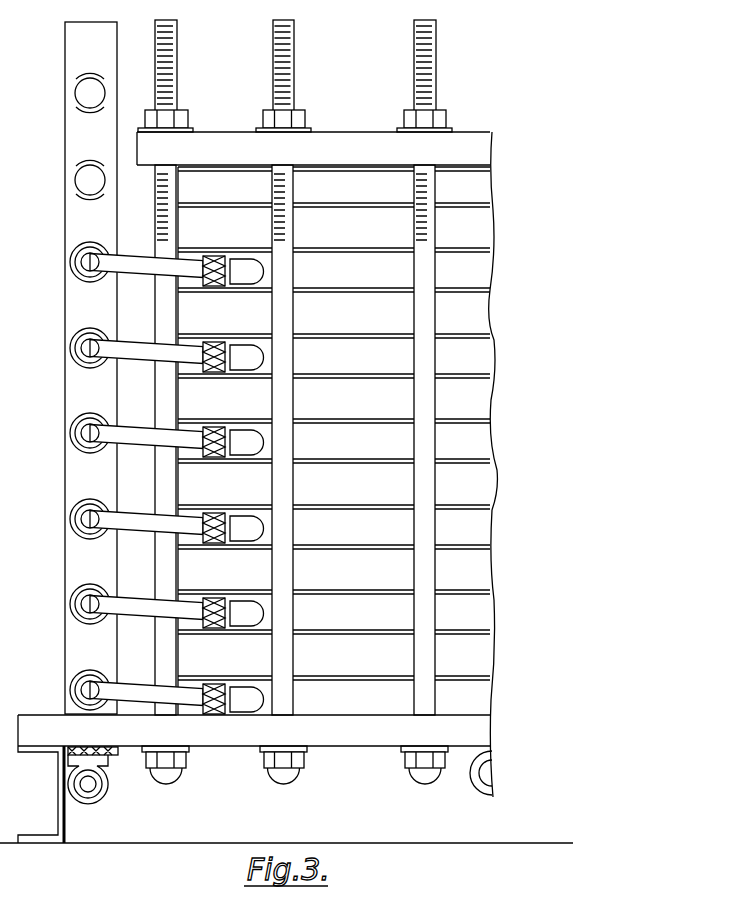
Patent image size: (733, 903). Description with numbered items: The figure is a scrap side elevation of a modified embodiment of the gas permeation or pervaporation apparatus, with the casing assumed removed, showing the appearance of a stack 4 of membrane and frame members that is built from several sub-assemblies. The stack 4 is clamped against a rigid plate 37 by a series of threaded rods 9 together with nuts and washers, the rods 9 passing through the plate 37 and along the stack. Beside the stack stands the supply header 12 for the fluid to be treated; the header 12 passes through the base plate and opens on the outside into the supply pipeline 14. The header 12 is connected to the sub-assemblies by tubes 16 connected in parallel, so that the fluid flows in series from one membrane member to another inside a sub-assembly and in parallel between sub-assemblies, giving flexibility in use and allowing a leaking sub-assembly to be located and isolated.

The rigid plate 37 is at (215, 143).
The threaded rods 9 is at (161, 214).
The stack 4 is at (190, 305).
The supply header 12 is at (72, 403).
The tubes 16 is at (125, 518).
The supply pipeline 14 is at (82, 784).